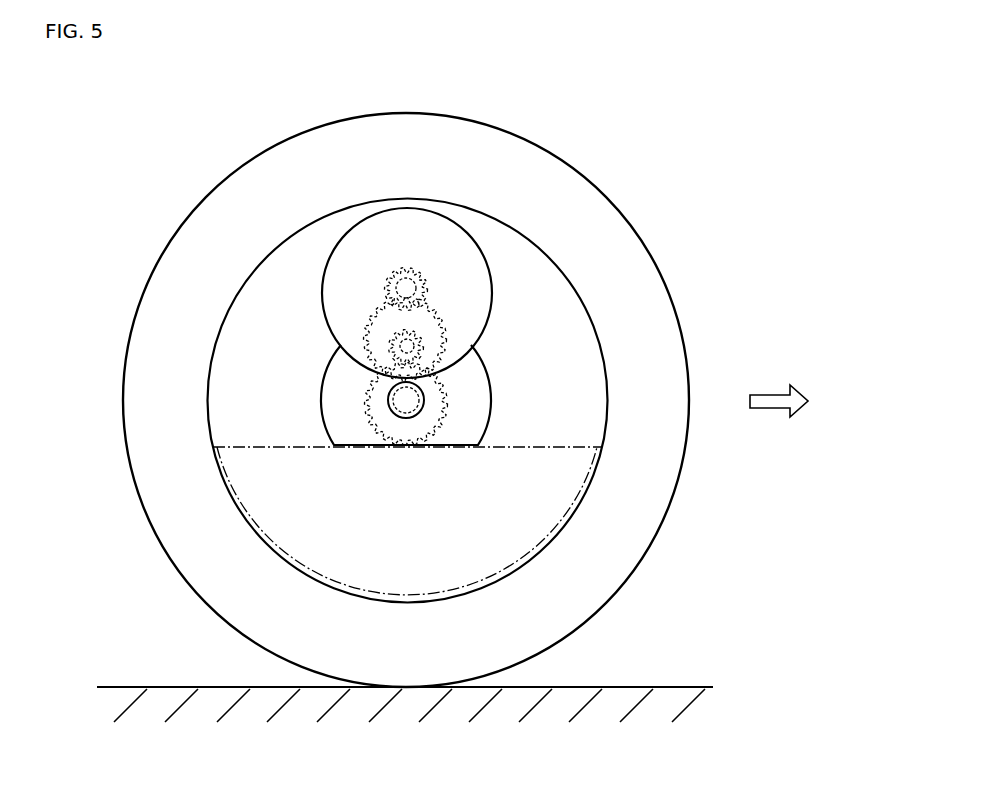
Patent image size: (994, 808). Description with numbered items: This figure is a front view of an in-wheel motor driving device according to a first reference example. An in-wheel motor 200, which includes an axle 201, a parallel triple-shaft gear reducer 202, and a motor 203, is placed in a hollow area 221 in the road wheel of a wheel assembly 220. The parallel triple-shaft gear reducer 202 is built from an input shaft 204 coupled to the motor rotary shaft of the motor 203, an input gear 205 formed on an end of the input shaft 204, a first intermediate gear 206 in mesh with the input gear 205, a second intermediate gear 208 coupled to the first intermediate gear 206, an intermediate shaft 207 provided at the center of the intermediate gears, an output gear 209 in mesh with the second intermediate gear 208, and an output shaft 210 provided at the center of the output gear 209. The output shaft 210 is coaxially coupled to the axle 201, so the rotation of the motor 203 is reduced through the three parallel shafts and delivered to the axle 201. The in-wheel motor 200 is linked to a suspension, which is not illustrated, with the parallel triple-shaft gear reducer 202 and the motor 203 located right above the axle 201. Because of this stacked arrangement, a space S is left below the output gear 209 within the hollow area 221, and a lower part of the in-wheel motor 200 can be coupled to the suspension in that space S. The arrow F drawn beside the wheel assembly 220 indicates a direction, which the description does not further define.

The in-wheel motor 200 is at (300, 308).
The axle 201 is at (388, 402).
The parallel triple-shaft gear reducer 202 is at (357, 338).
The motor 203 is at (425, 207).
The input shaft 204 is at (388, 275).
The input gear 205 is at (410, 267).
The first intermediate gear 206 is at (430, 317).
The intermediate shaft 207 is at (440, 358).
The second intermediate gear 208 is at (422, 337).
The output gear 209 is at (445, 410).
The output shaft 210 is at (422, 388).
The wheel assembly 220 is at (595, 182).
The hollow area 221 is at (525, 231).
The space S is at (555, 502).
The travel direction F is at (788, 401).